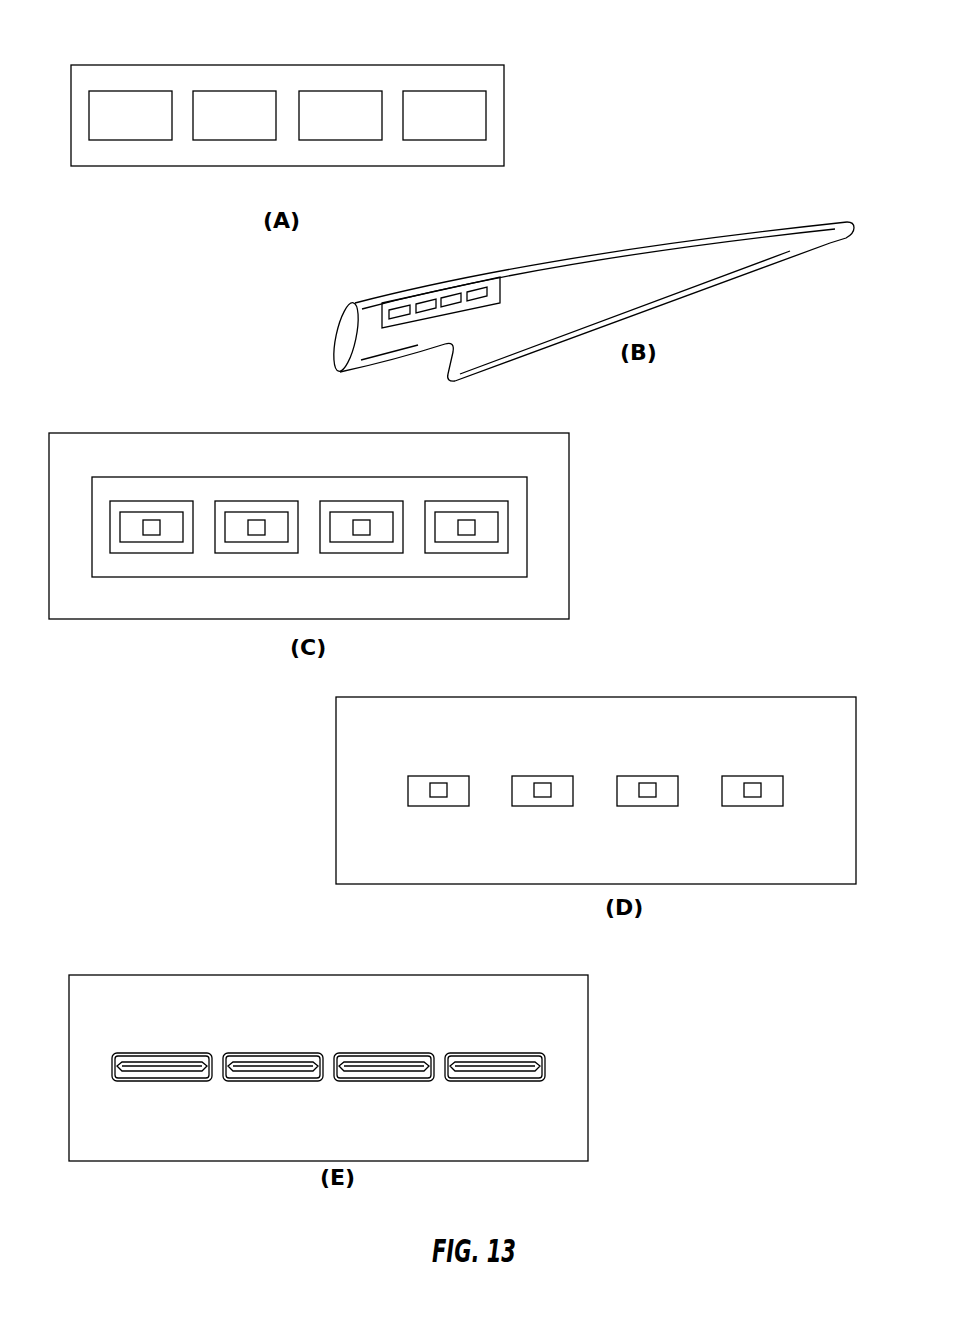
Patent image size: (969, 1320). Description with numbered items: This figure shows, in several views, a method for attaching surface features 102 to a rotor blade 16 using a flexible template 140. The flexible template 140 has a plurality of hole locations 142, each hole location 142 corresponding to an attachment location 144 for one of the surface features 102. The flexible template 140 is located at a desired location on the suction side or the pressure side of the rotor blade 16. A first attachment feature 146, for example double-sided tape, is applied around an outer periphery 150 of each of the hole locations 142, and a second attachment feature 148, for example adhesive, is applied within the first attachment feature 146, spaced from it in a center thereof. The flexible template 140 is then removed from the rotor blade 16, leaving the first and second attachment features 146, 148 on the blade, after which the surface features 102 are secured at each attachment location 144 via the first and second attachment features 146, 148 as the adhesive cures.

The rotor blade 16 is at (705, 233).
The surface features 102 is at (250, 1048).
The flexible template 140 is at (546, 48).
The hole locations 142 is at (102, 87).
The attachment location 144 is at (107, 101).
The first attachment feature 146 is at (172, 544).
The second attachment feature 148 is at (365, 537).
The outer periphery 150 is at (133, 555).